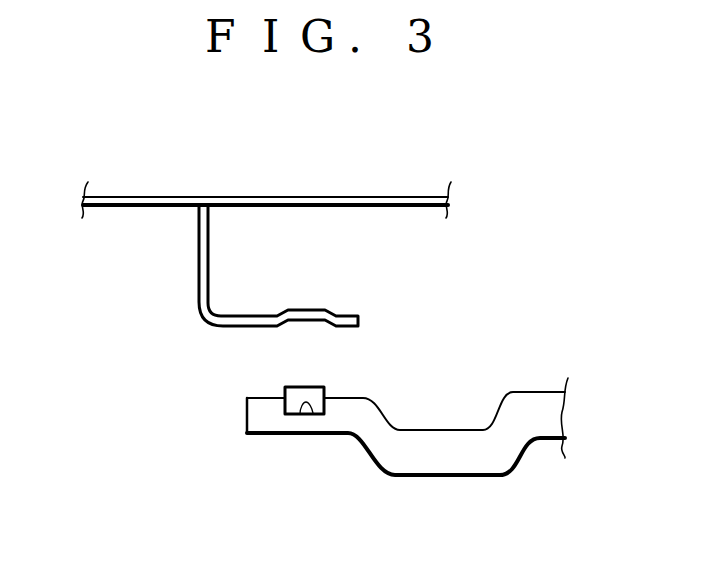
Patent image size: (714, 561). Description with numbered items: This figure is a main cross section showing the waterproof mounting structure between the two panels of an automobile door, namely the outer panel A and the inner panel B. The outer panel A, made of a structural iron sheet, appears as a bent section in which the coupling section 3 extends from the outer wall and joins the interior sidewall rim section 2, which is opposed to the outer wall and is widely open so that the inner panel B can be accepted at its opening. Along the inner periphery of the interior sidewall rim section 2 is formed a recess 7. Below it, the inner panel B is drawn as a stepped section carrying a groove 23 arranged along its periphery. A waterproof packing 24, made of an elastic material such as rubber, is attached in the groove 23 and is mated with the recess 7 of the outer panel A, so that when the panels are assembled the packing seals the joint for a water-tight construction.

The outer panel A is at (322, 183).
The inner panel B is at (403, 409).
The interior sidewall rim section 2 is at (278, 297).
The coupling section 3 is at (244, 297).
The recess 7 is at (300, 320).
The groove 23 is at (300, 414).
The waterproof packing 24 is at (323, 387).